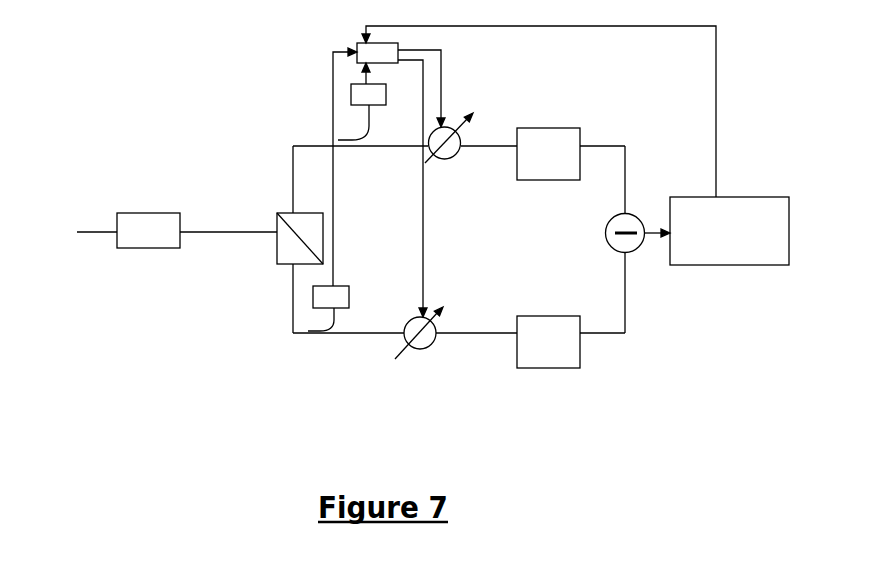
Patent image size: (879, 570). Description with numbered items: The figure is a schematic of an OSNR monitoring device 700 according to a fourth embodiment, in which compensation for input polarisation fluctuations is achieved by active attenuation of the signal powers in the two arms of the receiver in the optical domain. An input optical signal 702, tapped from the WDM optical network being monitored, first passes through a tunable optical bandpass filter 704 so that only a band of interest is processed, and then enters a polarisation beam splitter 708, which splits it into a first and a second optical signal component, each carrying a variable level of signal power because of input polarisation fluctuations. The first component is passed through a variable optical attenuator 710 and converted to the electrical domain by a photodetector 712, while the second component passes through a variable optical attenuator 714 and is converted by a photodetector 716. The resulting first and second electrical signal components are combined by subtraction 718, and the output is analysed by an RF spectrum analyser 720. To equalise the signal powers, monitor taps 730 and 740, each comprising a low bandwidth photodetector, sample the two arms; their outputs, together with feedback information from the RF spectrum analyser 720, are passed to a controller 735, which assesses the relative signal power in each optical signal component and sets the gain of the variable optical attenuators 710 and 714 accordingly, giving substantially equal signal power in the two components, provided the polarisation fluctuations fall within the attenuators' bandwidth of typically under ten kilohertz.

The OSNR monitoring device 700 is at (166, 147).
The input optical signal 702 is at (79, 217).
The tunable optical bandpass filter 704 is at (148, 230).
The polarisation beam splitter 708 is at (281, 233).
The variable optical attenuator 710 is at (457, 151).
The photodetector 712 is at (548, 154).
The variable optical attenuator 714 is at (427, 341).
The photodetector 716 is at (548, 342).
The subtraction 718 is at (610, 240).
The RF spectrum analyser 720 is at (729, 231).
The monitor tap 730 is at (370, 101).
The controller 735 is at (362, 44).
The monitor tap 740 is at (338, 312).